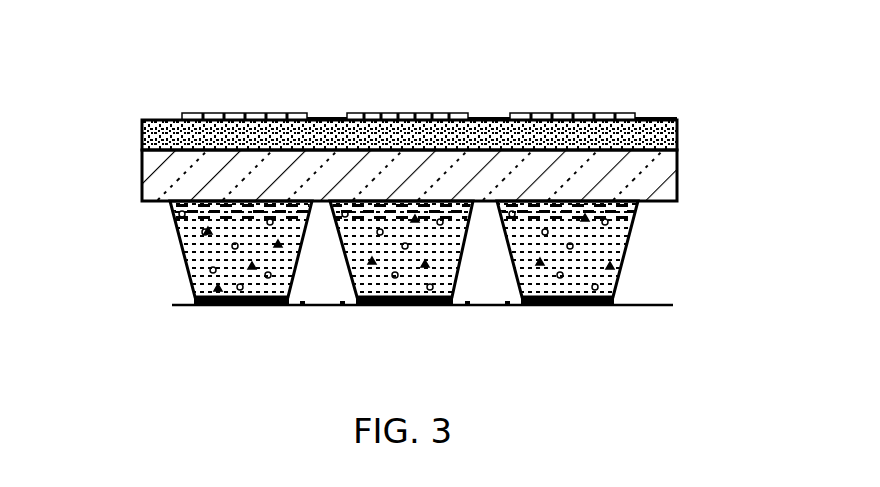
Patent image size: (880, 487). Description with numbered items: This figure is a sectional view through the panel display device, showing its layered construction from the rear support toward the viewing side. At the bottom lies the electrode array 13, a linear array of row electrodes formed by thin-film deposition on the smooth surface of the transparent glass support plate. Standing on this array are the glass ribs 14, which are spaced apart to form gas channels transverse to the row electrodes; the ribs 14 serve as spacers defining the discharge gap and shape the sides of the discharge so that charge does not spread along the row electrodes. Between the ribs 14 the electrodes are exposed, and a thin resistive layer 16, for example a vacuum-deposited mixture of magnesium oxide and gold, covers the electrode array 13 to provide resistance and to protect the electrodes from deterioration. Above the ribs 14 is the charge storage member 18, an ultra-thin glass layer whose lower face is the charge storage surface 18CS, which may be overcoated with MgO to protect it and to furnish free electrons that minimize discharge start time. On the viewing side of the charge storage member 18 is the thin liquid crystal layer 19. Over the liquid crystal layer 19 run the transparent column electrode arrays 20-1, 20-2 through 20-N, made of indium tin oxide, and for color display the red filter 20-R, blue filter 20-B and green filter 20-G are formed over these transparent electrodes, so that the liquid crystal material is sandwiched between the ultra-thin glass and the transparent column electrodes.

The electrode array 13 is at (464, 309).
The ribs 14 is at (187, 265).
The resistive layer 16 is at (212, 308).
The charge storage member 18 is at (373, 175).
The charge storage surface 18CS is at (223, 203).
The liquid crystal layer 19 is at (445, 137).
The red filter 20-R is at (244, 85).
The green filter 20-G is at (572, 90).
The blue filter 20-B is at (411, 83).
The transparent column electrode 20-1 is at (338, 87).
The transparent column electrode 20-2 is at (533, 73).
The transparent column electrode 20-N is at (685, 100).